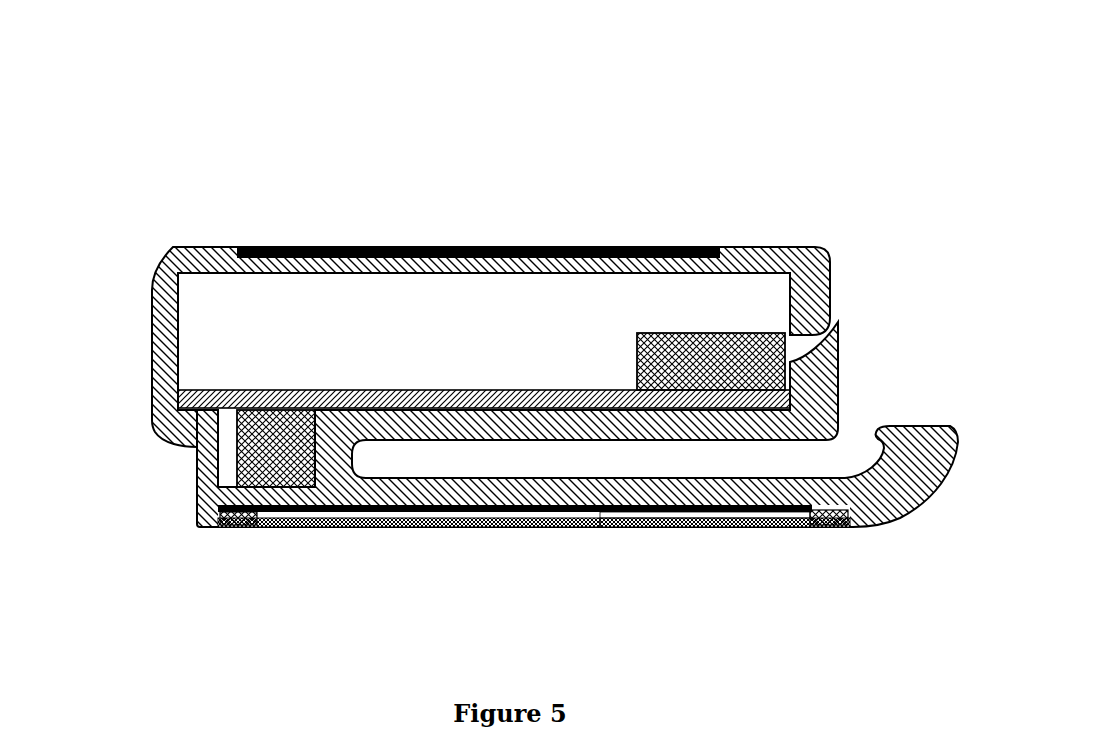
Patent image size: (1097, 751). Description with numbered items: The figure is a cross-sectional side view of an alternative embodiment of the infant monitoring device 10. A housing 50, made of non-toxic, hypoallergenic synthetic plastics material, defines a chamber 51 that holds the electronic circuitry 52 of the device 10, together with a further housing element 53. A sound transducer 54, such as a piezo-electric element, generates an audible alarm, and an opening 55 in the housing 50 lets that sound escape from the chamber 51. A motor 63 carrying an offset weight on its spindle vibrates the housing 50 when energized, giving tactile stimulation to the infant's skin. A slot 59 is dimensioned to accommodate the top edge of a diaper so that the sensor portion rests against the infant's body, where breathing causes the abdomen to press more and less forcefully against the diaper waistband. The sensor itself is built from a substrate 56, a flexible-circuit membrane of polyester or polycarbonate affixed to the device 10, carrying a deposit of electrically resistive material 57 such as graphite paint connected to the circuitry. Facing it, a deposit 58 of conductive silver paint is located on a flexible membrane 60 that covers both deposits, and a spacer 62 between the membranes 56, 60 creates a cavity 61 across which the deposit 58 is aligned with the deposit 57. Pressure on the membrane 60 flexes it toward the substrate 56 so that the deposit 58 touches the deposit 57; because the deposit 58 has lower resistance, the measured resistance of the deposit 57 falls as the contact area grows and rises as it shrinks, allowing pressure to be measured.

The device 10 is at (697, 222).
The housing 50 is at (200, 247).
The chamber 51 is at (293, 302).
The electronic circuitry 52 is at (385, 250).
The housing element 53 is at (477, 390).
The sound transducer 54 is at (637, 333).
The opening 55 is at (823, 330).
The substrate 56 is at (720, 510).
The electrically resistive material 57 is at (735, 520).
The electrically conductive material deposit 58 is at (740, 527).
The slot 59 is at (631, 462).
The flexible membrane 60 is at (357, 527).
The cavity 61 is at (320, 507).
The spacer 62 is at (228, 527).
The motor 63 is at (240, 470).